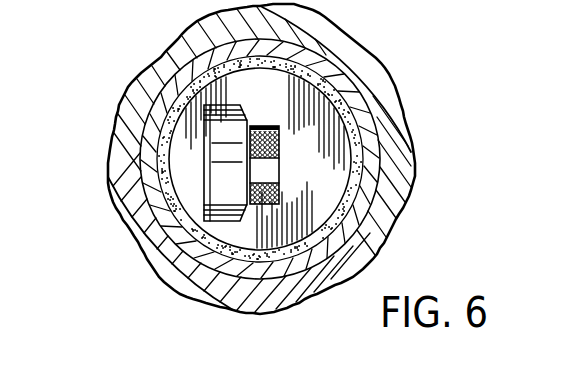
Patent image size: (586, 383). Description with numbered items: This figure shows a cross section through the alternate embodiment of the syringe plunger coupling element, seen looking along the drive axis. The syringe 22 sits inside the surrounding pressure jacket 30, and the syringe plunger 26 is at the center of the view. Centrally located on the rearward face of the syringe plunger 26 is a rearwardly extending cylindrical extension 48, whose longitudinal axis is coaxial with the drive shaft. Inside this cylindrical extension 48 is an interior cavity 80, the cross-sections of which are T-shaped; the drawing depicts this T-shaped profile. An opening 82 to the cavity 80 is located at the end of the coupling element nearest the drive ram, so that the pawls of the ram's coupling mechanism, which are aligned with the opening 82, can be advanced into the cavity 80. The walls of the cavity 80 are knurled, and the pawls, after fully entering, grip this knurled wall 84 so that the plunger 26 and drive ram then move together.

The syringe 22 is at (139, 63).
The syringe plunger 26 is at (141, 129).
The pressure jacket 30 is at (377, 74).
The cylindrical extension 48 is at (333, 128).
The interior cavity 80 is at (213, 110).
The opening 82 is at (215, 176).
The knurled wall 84 is at (266, 168).